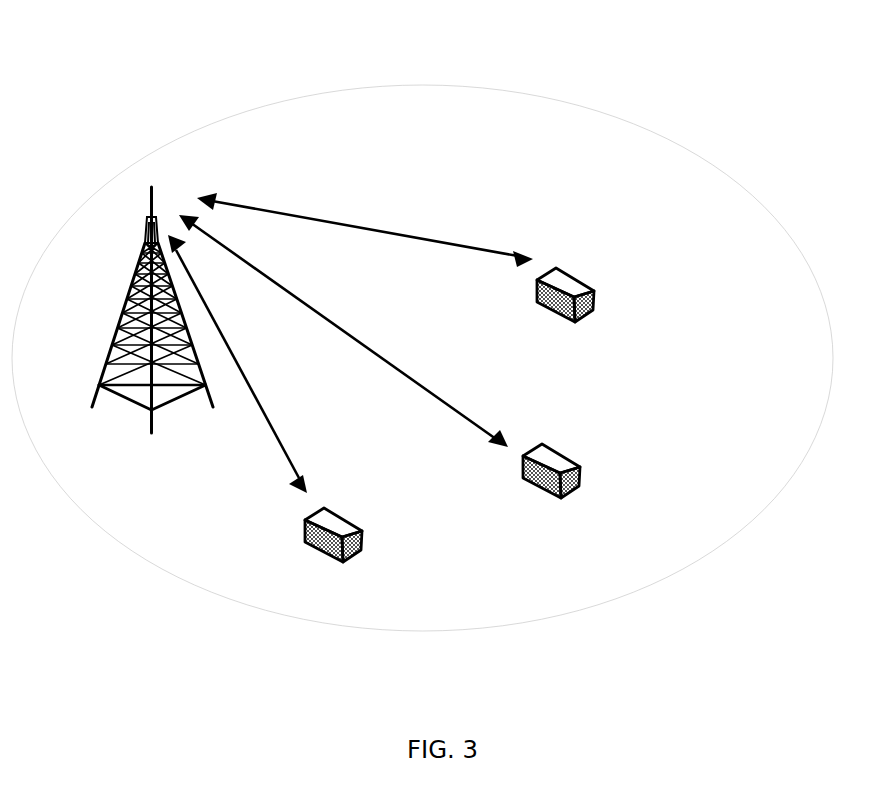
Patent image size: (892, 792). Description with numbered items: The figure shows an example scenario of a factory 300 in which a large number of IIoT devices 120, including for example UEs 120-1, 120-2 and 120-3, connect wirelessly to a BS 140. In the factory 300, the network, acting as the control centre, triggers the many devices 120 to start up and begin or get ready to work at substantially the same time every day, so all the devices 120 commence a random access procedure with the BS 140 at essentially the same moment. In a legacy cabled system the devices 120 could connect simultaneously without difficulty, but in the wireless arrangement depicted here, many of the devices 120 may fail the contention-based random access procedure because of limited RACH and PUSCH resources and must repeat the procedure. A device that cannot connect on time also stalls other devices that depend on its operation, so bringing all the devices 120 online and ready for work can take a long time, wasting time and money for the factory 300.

The factory 300 is at (422, 326).
The BS 140 is at (134, 310).
The IIoT devices 120 is at (495, 387).
The UE 120-1 is at (366, 550).
The UE 120-2 is at (611, 281).
The UE 120-3 is at (594, 466).